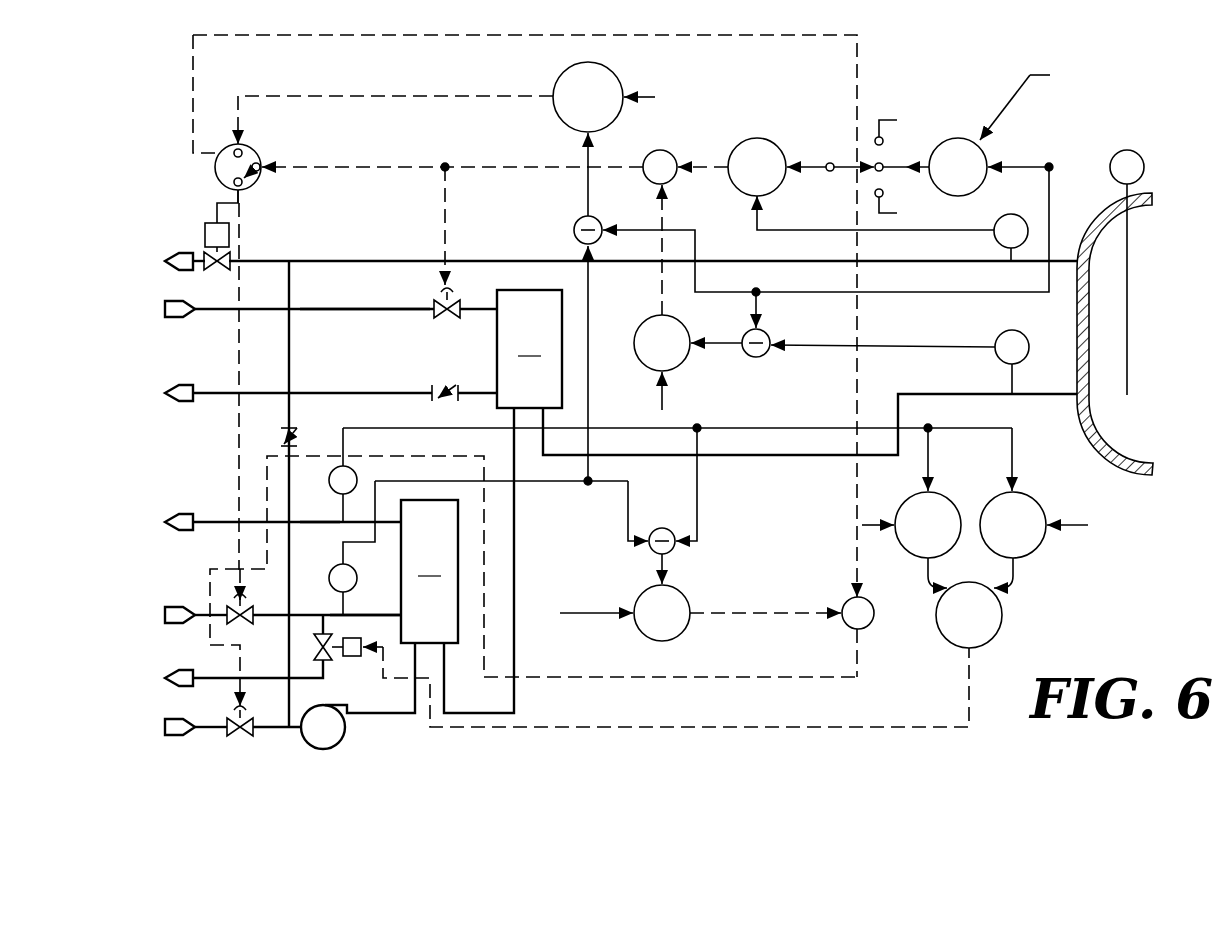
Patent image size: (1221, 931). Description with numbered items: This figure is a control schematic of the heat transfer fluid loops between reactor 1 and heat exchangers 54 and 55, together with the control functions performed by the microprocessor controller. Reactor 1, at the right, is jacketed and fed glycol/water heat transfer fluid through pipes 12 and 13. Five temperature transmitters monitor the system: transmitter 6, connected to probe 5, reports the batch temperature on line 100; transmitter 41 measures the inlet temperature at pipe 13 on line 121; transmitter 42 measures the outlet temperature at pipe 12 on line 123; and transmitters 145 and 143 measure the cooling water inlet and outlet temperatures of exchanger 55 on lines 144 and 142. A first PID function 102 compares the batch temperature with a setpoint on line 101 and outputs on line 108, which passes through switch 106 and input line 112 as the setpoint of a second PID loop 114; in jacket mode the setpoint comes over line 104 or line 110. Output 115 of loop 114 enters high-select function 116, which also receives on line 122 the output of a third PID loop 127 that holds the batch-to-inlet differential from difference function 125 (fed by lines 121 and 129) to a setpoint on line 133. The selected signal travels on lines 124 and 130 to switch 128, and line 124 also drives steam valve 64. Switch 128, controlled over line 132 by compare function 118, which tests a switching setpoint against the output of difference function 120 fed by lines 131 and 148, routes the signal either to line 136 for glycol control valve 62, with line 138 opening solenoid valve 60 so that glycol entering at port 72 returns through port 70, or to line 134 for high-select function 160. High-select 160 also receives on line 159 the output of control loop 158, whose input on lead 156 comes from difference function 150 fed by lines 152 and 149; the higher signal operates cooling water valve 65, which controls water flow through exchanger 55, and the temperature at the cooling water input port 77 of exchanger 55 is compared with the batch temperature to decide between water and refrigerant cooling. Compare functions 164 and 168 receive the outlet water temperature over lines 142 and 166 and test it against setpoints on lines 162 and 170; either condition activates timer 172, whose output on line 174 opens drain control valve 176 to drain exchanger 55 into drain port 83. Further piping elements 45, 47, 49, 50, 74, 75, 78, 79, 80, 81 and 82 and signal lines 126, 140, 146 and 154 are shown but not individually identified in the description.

The reactor 1 is at (1158, 249).
The probe 5 is at (1130, 318).
The temperature transmitter 6 is at (1136, 156).
The pipe 12 is at (985, 266).
The pipe 13 is at (1020, 392).
The temperature transmitter 41 is at (1003, 336).
The temperature transmitter 42 is at (1018, 218).
The check valve 45 is at (300, 437).
The line 47 is at (291, 352).
The line 49 is at (293, 540).
The pump 50 is at (345, 735).
The heat exchanger 54 is at (529, 349).
The heat exchanger 55 is at (429, 571).
The solenoid valve 60 is at (229, 232).
The glycol control valve 62 is at (247, 710).
The steam valve 64 is at (453, 293).
The cooling water valve 65 is at (247, 598).
The port 70 is at (170, 266).
The port 72 is at (172, 736).
The steam in 74 is at (180, 318).
The water in 75 is at (170, 622).
The cooling water input port 77 is at (358, 613).
The steam line 78 is at (350, 309).
The water out line 79 is at (325, 520).
The check valve 80 is at (452, 378).
The water out 81 is at (180, 527).
The condensate out 82 is at (180, 398).
The drain port 83 is at (175, 680).
The line 100 is at (1028, 162).
The line 101 is at (1028, 78).
The PID control function 102 is at (982, 146).
The line 104 is at (884, 144).
The switch 106 is at (850, 163).
The output line 108 is at (886, 176).
The line 110 is at (872, 200).
The input line 112 is at (816, 165).
The PID loop function 114 is at (754, 138).
The output line 115 is at (726, 165).
The high-select function 116 is at (670, 150).
The compare function 118 is at (607, 122).
The difference function 120 is at (574, 226).
The line 121 is at (896, 345).
The line 122 is at (665, 215).
The line 123 is at (896, 232).
The line 124 is at (476, 167).
The difference function 125 is at (770, 336).
The line 126 is at (447, 208).
The PID loop function 127 is at (680, 325).
The switch function 128 is at (256, 150).
The line 129 is at (762, 312).
The line 130 is at (327, 173).
The line 131 is at (697, 252).
The signal line 132 is at (354, 96).
The line 133 is at (656, 398).
The line 134 is at (436, 35).
The line 136 is at (243, 200).
The output line 138 is at (217, 208).
The line 140 is at (239, 436).
The line 142 is at (372, 428).
The temperature transmitter 143 is at (329, 476).
The line 144 is at (456, 478).
The temperature transmitter 145 is at (329, 575).
The line 146 is at (484, 672).
The line 148 is at (590, 306).
The line 149 is at (616, 510).
The difference function 150 is at (665, 526).
The line 152 is at (698, 496).
The line 154 is at (772, 428).
The lead 156 is at (670, 563).
The control loop function 158 is at (683, 600).
The lead 159 is at (776, 616).
The high-select function 160 is at (876, 610).
The line 162 is at (872, 527).
The compare function 164 is at (906, 495).
The line 166 is at (1003, 452).
The compare function 168 is at (1036, 493).
The lead 170 is at (1070, 528).
The timer 172 is at (1005, 619).
The line 174 is at (969, 684).
The drain control valve 176 is at (347, 660).